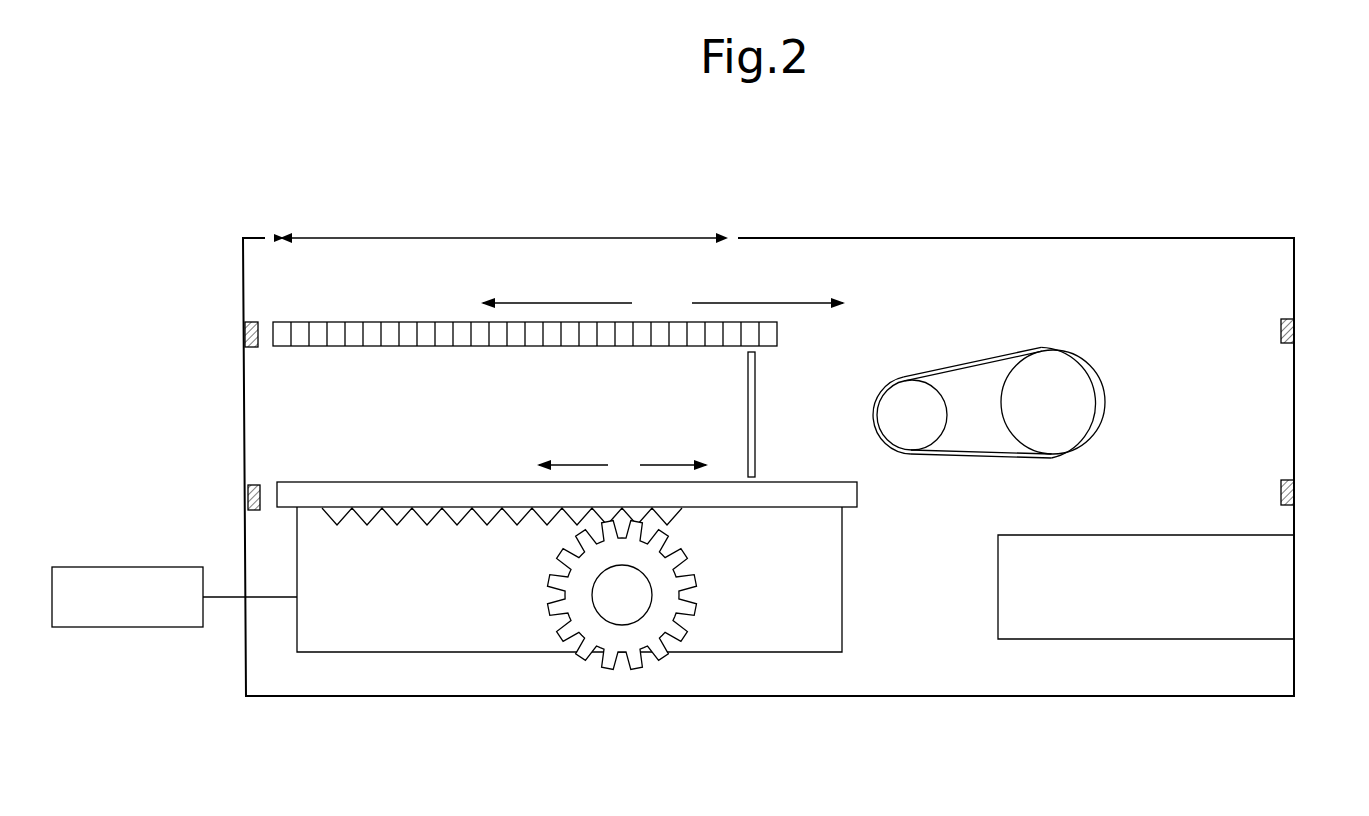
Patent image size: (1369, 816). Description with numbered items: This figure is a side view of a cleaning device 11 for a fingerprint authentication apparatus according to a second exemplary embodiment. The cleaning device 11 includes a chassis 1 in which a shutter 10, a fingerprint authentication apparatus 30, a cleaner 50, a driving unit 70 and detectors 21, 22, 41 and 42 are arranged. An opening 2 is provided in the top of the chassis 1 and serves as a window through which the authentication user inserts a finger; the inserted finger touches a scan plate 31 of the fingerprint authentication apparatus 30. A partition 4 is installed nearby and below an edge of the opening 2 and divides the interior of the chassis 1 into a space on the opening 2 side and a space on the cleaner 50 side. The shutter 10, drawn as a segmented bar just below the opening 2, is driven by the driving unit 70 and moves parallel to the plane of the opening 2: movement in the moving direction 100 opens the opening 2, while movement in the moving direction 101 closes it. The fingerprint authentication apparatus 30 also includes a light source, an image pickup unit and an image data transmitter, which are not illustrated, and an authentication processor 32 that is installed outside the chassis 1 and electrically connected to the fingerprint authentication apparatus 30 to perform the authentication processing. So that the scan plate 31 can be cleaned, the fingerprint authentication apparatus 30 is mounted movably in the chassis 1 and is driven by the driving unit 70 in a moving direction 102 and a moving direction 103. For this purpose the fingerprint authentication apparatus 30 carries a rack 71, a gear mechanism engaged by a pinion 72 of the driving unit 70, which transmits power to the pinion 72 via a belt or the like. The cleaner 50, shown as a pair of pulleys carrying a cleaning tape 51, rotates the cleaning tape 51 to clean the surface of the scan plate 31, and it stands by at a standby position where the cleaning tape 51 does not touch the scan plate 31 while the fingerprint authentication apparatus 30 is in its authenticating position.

The chassis 1 is at (1294, 415).
The opening 2 is at (410, 237).
The partition 4 is at (755, 385).
The shutter 10 is at (338, 320).
The cleaning device 11 is at (750, 193).
The detector 21 is at (245, 335).
The detector 22 is at (1294, 330).
The fingerprint authentication apparatus 30 is at (352, 655).
The scan plate 31 is at (338, 480).
The authentication processor 32 is at (110, 629).
The detector 41 is at (248, 497).
The detector 42 is at (1294, 492).
The cleaner 50 is at (1105, 390).
The cleaning tape 51 is at (992, 455).
The driving unit 70 is at (1178, 533).
The rack 71 is at (420, 525).
The pinion 72 is at (690, 565).
The moving direction 100 is at (768, 301).
The moving direction 101 is at (560, 301).
The moving direction 102 is at (675, 463).
The moving direction 103 is at (578, 463).